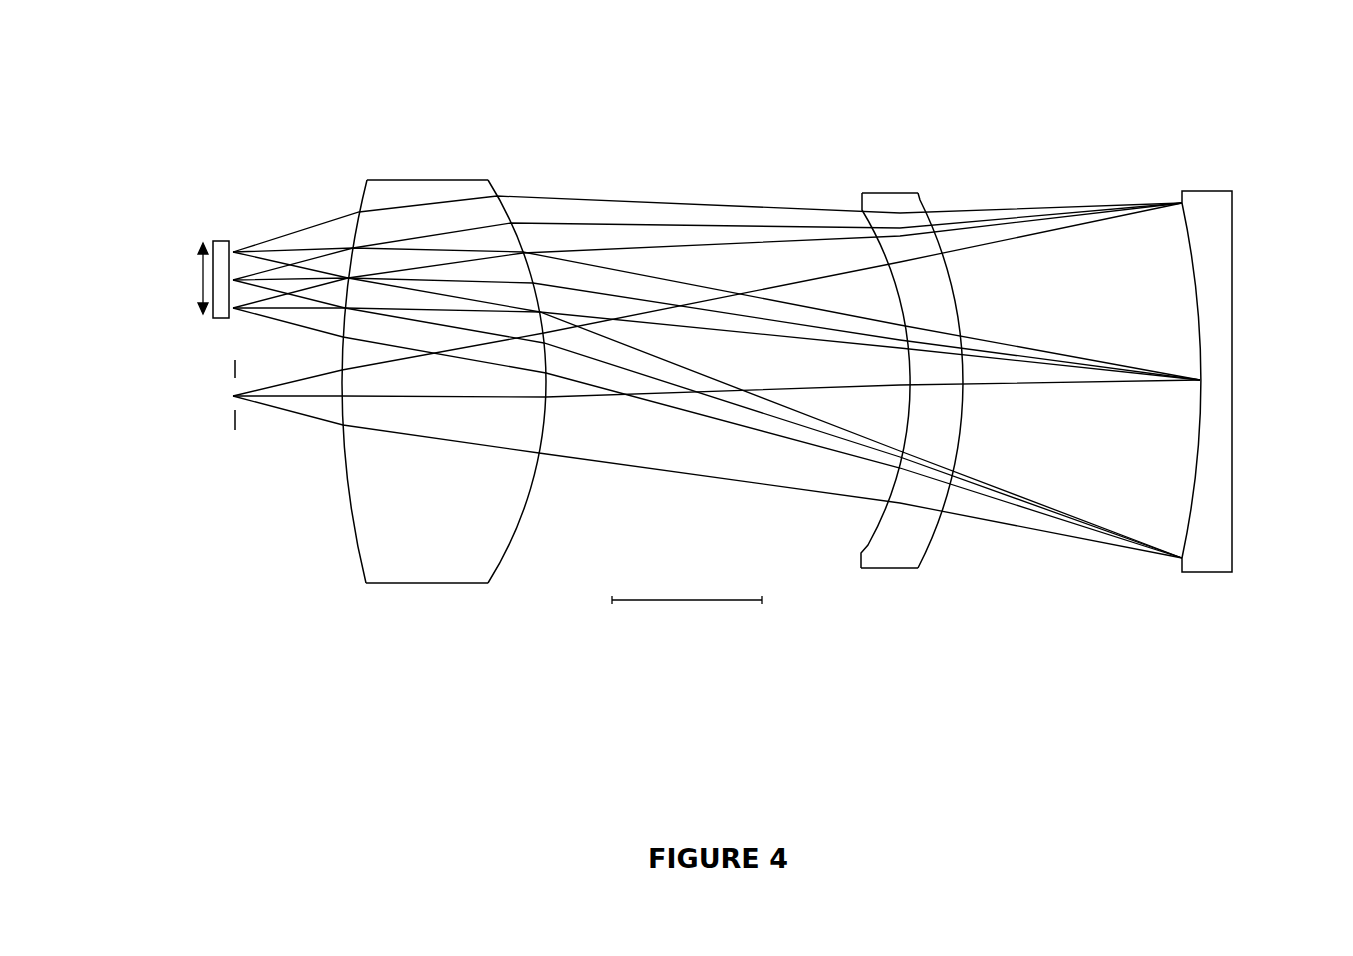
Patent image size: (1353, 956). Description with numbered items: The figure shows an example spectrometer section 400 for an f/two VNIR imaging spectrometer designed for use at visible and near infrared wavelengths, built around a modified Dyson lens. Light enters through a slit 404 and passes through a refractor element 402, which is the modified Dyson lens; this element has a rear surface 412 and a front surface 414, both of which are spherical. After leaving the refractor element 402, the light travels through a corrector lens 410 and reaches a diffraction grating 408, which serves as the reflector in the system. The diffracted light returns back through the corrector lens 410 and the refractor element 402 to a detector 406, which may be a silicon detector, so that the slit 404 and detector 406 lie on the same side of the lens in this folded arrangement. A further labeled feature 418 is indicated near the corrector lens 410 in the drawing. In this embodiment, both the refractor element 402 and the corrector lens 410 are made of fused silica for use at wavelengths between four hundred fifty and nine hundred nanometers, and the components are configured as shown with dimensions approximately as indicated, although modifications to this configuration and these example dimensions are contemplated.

The spectrometer section 400 is at (676, 90).
The refractor element 402 is at (393, 180).
The slit 404 is at (235, 375).
The detector 406 is at (222, 240).
The diffraction grating 408 is at (1194, 492).
The corrector lens 410 is at (885, 192).
The rear surface 412 is at (357, 203).
The front surface 414 is at (492, 186).
The second lens surface f 418 is at (920, 200).